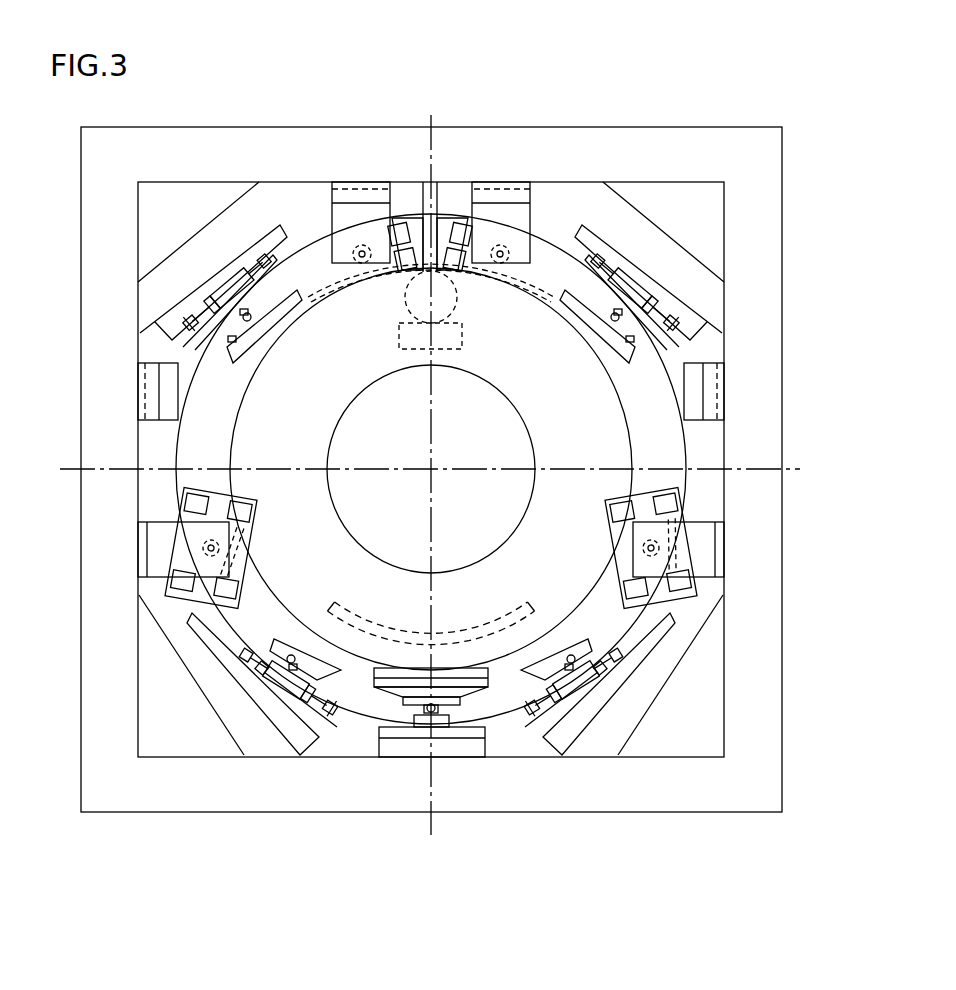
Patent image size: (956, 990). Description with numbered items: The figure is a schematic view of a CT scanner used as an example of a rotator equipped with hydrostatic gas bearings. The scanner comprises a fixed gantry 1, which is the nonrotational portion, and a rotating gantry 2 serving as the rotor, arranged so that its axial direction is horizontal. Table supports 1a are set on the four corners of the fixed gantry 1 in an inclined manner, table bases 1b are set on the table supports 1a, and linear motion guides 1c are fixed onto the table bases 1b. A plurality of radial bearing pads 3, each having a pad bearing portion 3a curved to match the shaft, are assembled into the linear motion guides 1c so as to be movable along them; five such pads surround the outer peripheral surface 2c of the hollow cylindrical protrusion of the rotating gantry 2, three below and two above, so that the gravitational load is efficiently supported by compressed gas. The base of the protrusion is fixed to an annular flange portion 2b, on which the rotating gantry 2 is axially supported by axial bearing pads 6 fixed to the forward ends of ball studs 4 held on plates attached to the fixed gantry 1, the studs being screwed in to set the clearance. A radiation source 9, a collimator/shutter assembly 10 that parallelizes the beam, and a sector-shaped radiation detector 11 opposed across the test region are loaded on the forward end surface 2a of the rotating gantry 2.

The fixed gantry 1 is at (757, 162).
The table supports 1a is at (623, 715).
The table bases 1b is at (655, 645).
The linear motion guides 1c is at (615, 657).
The rotating gantry 2 is at (520, 335).
The forward end surface 2a is at (622, 458).
The flange portion 2b is at (653, 408).
The outer peripheral surface 2c is at (632, 440).
The radial bearing pad 3 is at (290, 308).
The pad bearing portion 3a is at (507, 660).
The ball stud 4 is at (575, 660).
The axial bearing pad 6 is at (407, 242).
The radiation source 9 is at (400, 302).
The collimator/shutter assembly 10 is at (463, 335).
The radiation detector 11 is at (375, 637).